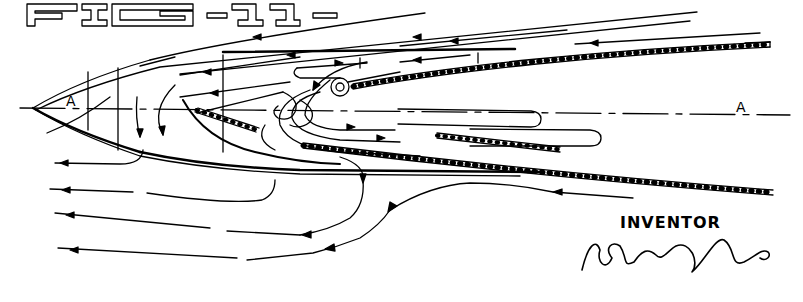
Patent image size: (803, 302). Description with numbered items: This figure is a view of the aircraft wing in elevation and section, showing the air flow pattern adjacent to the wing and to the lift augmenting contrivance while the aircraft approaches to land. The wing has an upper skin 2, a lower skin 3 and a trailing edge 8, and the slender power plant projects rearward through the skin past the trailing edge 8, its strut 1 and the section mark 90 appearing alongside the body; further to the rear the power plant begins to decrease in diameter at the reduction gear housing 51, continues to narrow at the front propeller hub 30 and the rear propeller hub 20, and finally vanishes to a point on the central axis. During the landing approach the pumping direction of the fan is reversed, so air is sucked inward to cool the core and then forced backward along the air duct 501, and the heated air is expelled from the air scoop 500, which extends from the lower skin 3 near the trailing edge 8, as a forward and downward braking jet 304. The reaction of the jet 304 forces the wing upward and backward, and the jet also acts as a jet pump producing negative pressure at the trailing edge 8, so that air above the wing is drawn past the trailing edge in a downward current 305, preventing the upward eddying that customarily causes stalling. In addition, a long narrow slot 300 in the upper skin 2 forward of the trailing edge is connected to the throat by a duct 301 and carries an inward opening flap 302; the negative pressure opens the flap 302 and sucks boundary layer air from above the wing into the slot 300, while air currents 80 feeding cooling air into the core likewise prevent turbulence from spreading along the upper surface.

The upper strut 1 is at (668, 47).
The upper skin 2 is at (753, 43).
The lower skin 3 is at (753, 190).
The trailing edge 8 is at (187, 103).
The rear propeller hub 20 is at (58, 97).
The front propeller hub 30 is at (105, 75).
The reduction gear housing 51 is at (157, 62).
The air currents 80 is at (380, 53).
The upper channel 90 is at (497, 57).
The slot 300 is at (297, 94).
The duct 301 is at (468, 118).
The flap 302 is at (357, 82).
The braking jet 304 is at (353, 210).
The downward current 305 is at (262, 186).
The air scoop 500 is at (239, 112).
The air duct 501 is at (570, 149).